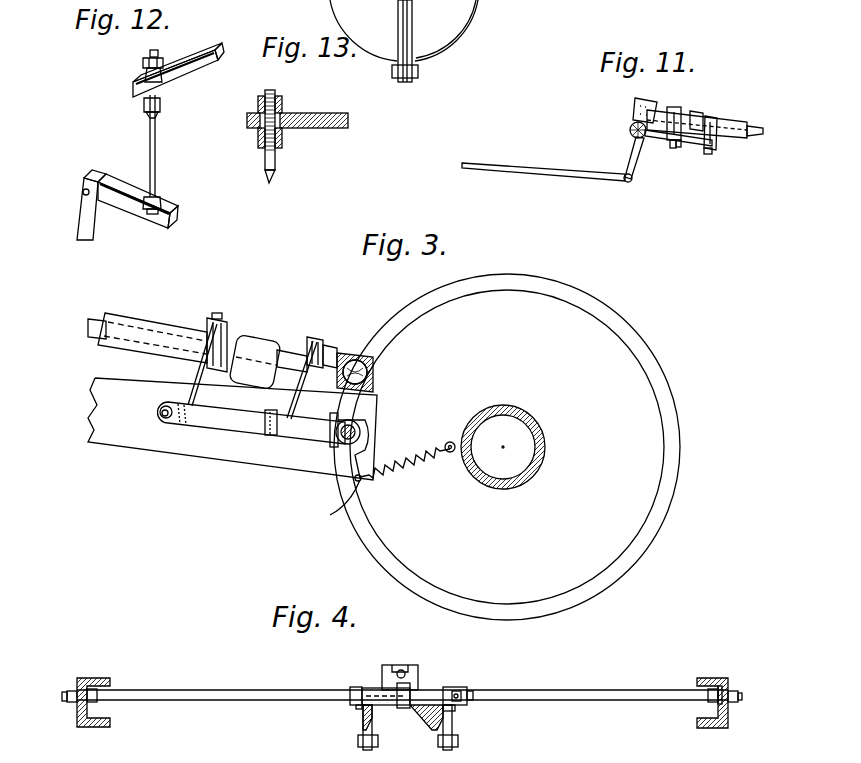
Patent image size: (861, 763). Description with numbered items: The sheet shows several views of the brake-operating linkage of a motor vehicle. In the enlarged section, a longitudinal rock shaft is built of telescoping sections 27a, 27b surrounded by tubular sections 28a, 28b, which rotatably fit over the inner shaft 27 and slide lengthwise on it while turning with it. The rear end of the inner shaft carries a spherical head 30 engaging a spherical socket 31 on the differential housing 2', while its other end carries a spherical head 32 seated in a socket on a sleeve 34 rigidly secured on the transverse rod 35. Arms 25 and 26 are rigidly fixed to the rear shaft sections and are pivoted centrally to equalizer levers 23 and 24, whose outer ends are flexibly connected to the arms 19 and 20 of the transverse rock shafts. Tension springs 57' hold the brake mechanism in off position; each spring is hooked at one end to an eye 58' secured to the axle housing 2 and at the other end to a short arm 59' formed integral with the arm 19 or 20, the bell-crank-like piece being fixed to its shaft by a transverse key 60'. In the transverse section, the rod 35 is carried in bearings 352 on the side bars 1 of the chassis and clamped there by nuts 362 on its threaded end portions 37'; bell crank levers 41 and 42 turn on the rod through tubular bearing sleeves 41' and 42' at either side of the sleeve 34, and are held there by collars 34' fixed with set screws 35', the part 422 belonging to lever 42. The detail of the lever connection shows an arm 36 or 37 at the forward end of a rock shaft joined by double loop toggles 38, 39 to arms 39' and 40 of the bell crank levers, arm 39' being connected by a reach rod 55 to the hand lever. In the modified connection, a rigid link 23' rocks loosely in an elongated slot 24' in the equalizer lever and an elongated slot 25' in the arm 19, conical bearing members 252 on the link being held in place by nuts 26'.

In FIG. 4, the frame bracket 1 is at (93, 678).
In FIG. 3, the hub 2 is at (506, 441).
In FIG. 3, the differential housing 2' is at (507, 447).
In FIG. 12, the arm 19 is at (120, 193).
In FIG. 3, the arm 19 is at (242, 424).
In FIG. 3, the arm 20 is at (203, 421).
In FIG. 12, the equalizer lever 23 is at (178, 73).
In FIG. 13, the equalizer lever 23 is at (297, 108).
In FIG. 3, the equalizer lever 23 is at (324, 341).
In FIG. 12, the connecting rod or link 23' is at (136, 146).
In FIG. 3, the equalizer lever 24 is at (203, 351).
In FIG. 12, the elongated slot 24' is at (125, 69).
In FIG. 13, the elongated slot 24' is at (255, 143).
In FIG. 3, the arm 25 is at (321, 371).
In FIG. 12, the elongated slot 25' is at (174, 200).
In FIG. 13, the conical bearing member 252 is at (280, 110).
In FIG. 3, the arm 26 is at (255, 350).
In FIG. 13, the nut 26' is at (257, 94).
In FIG. 3, the inner longitudinal rock shaft 27 is at (89, 326).
In FIG. 11, the forward shaft section 27a is at (760, 133).
In FIG. 3, the rear shaft section 27b is at (289, 350).
In FIG. 11, the front tubular shaft section 28a is at (733, 128).
In FIG. 3, the rear tubular shaft section 28b is at (132, 322).
In FIG. 3, the spherical head 30 is at (375, 364).
In FIG. 3, the spherical socket 31 is at (375, 377).
In FIG. 11, the spherical head 32 is at (645, 98).
In FIG. 4, the spherical head 32 is at (405, 669).
In FIG. 4, the sleeve 34 is at (406, 677).
In FIG. 4, the collar 34' is at (410, 682).
In FIG. 11, the transverse rod 35 is at (652, 143).
In FIG. 4, the transverse rod 35 is at (402, 707).
In FIG. 4, the set screw 35' is at (495, 685).
In FIG. 4, the bearing 352 is at (73, 690).
In FIG. 11, the arm 36 is at (672, 112).
In FIG. 4, the nut 362 is at (737, 705).
In FIG. 11, the arm 37 is at (715, 110).
In FIG. 4, the threaded end portion 37' is at (398, 699).
In FIG. 11, the double loop toggle 38 is at (674, 148).
In FIG. 11, the double loop toggle 39 is at (726, 143).
In FIG. 11, the arm of bell crank lever 39' is at (710, 169).
In FIG. 4, the arm of bell crank lever 39' is at (480, 714).
In FIG. 11, the arm of bell crank lever 40 is at (680, 147).
In FIG. 4, the arm of bell crank lever 40 is at (357, 706).
In FIG. 11, the bell crank lever 41 is at (642, 163).
In FIG. 4, the bell crank lever 41 is at (352, 727).
In FIG. 11, the tubular bearing sleeve 41' is at (619, 125).
In FIG. 4, the tubular bearing sleeve 41' is at (380, 727).
In FIG. 4, the bell crank lever 42 is at (465, 727).
In FIG. 4, the tubular bearing sleeve 42' is at (426, 720).
In FIG. 4, the nut 422 is at (441, 735).
In FIG. 11, the reach rod 55 is at (560, 167).
In FIG. 3, the tension spring 57' is at (405, 476).
In FIG. 3, the loop or eye 58' is at (441, 431).
In FIG. 3, the short arm 59' is at (330, 495).
In FIG. 3, the transverse key 60' is at (338, 447).